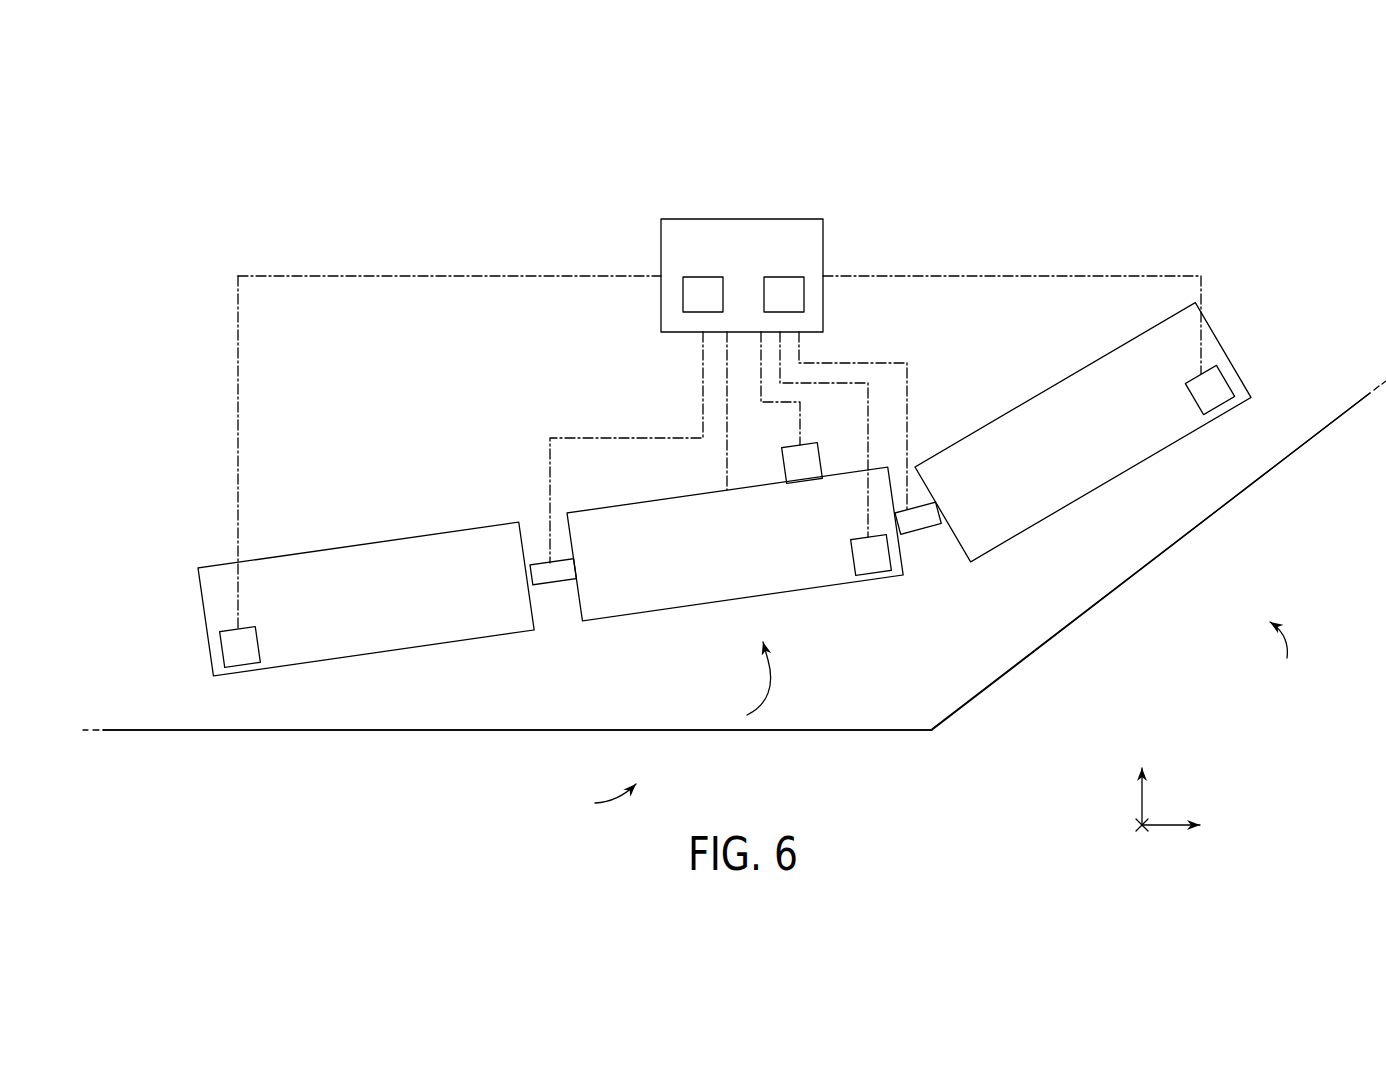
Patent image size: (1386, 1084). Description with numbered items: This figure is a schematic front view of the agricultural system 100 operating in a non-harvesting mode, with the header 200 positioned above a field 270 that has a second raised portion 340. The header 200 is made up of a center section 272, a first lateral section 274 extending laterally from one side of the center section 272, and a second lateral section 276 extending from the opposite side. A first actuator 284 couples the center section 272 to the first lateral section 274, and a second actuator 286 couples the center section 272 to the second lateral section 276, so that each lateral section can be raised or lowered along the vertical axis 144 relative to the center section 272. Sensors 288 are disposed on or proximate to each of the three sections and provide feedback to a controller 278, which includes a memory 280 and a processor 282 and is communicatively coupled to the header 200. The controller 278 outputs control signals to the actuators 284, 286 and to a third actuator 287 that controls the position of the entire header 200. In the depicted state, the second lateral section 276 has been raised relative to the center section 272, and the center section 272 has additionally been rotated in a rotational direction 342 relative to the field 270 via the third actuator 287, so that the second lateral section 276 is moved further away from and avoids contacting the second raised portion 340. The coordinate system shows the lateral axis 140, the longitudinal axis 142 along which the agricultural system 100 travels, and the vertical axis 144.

The agricultural system 100 is at (1208, 149).
The header 200 is at (1250, 304).
The controller 278 is at (743, 257).
The memory 280 is at (683, 292).
The processor 282 is at (804, 292).
The center section 272 is at (695, 495).
The first lateral section 274 is at (360, 542).
The second lateral section 276 is at (1053, 383).
The first actuator 284 is at (555, 585).
The second actuator 286 is at (920, 529).
The third actuator 287 is at (782, 466).
The sensor 288 is at (258, 640).
The field 270 is at (517, 773).
The second raised portion 340 is at (1151, 561).
The rotational direction 342 is at (772, 690).
The lateral axis 140 is at (1131, 826).
The longitudinal axis 142 is at (1137, 825).
The vertical axis 144 is at (1140, 800).